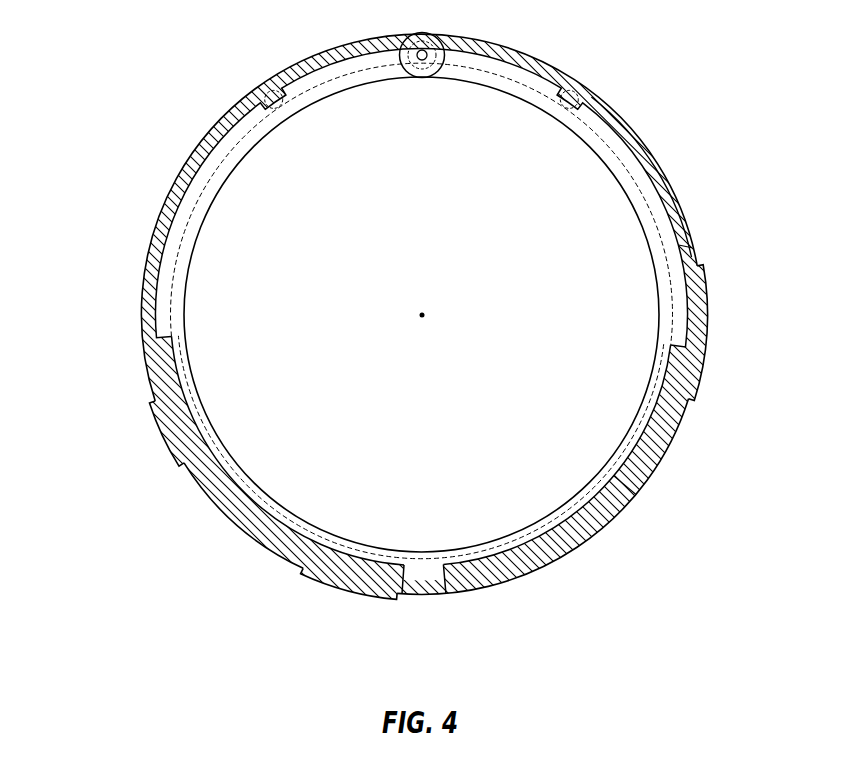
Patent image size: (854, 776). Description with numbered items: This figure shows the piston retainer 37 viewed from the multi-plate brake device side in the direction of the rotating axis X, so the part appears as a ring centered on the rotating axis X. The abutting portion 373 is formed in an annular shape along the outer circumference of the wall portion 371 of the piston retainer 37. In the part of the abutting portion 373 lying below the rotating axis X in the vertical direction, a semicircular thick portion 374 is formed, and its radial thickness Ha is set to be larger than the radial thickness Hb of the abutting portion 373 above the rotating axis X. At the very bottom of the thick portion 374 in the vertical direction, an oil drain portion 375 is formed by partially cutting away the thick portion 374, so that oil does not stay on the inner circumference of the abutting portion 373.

The piston retainer 37 is at (165, 165).
The wall portion 371 is at (607, 152).
The abutting portion 373 is at (641, 136).
The thick portion 374 is at (692, 368).
The oil drain portion 375 is at (413, 595).
The radial thickness Hb is at (680, 250).
The radial thickness Ha is at (654, 482).
The rotating axis X is at (424, 315).